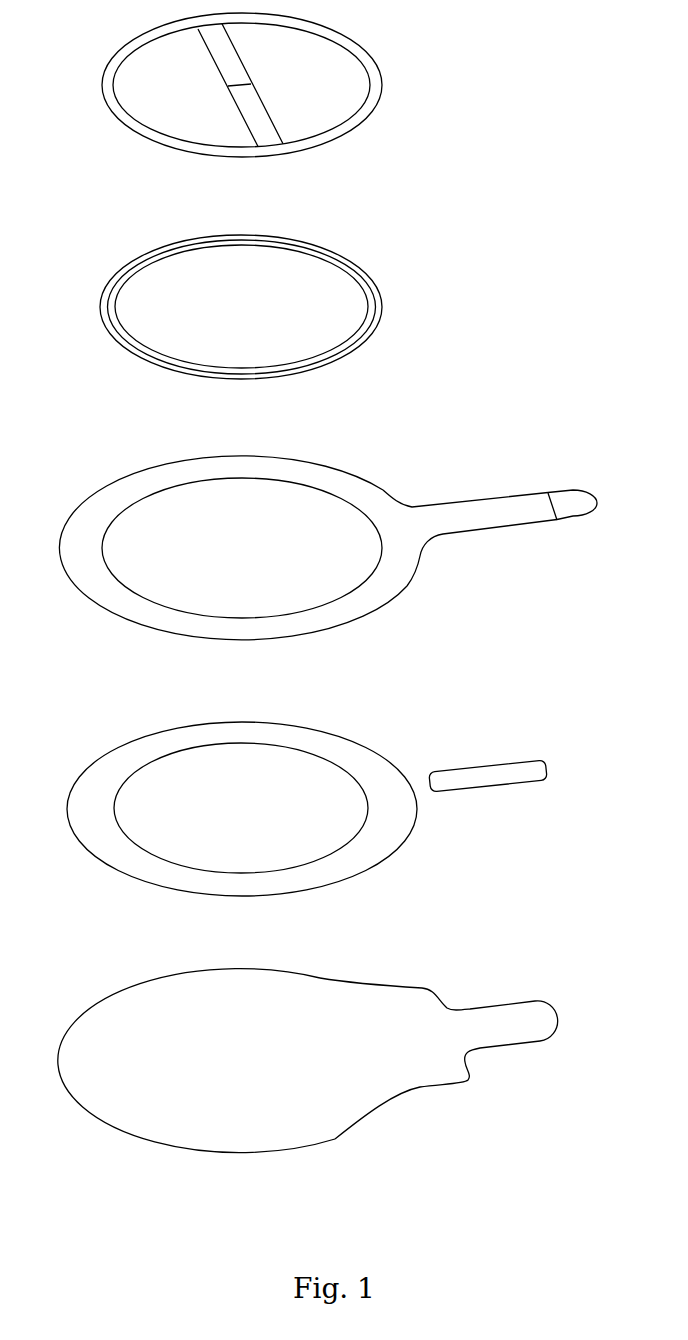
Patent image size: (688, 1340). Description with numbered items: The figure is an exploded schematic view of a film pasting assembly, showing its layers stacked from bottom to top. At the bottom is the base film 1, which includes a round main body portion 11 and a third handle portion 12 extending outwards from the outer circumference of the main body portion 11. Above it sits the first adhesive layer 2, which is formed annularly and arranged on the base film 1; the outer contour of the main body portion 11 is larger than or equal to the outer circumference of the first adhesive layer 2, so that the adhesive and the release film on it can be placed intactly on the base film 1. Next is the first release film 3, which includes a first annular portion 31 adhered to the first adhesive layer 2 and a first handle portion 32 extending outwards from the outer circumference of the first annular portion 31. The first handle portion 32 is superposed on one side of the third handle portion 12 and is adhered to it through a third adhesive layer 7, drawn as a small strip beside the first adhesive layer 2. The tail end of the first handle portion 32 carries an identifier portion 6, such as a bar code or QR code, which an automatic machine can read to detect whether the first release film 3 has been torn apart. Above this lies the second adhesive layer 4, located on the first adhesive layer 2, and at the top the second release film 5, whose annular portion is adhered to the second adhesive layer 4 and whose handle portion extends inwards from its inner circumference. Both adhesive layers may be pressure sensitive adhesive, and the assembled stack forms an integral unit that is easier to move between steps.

The base film 1 is at (308, 1094).
The main body portion 11 is at (328, 1115).
The third handle portion 12 is at (528, 1030).
The first adhesive layer 2 is at (85, 816).
The first release film 3 is at (329, 570).
The first annular portion 31 is at (400, 570).
The first handle portion 32 is at (542, 520).
The second adhesive layer 4 is at (110, 307).
The second release film 5 is at (367, 65).
The identifier portion 6 is at (567, 500).
The third adhesive layer 7 is at (495, 777).